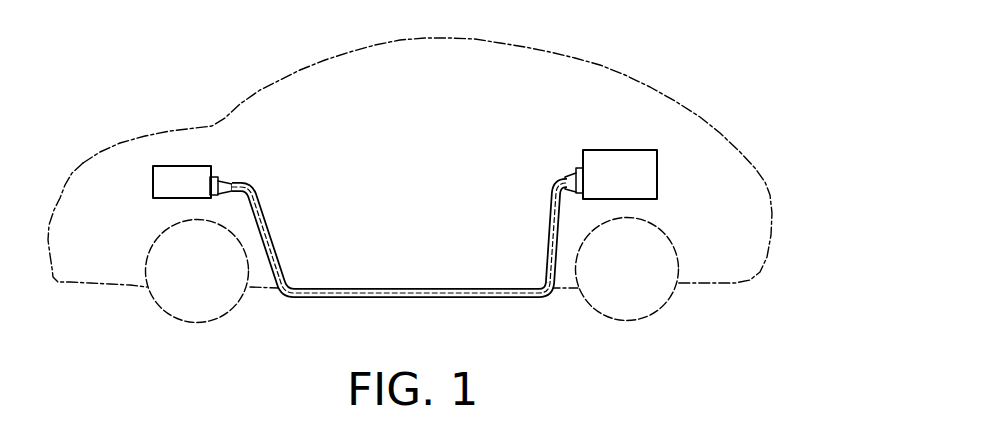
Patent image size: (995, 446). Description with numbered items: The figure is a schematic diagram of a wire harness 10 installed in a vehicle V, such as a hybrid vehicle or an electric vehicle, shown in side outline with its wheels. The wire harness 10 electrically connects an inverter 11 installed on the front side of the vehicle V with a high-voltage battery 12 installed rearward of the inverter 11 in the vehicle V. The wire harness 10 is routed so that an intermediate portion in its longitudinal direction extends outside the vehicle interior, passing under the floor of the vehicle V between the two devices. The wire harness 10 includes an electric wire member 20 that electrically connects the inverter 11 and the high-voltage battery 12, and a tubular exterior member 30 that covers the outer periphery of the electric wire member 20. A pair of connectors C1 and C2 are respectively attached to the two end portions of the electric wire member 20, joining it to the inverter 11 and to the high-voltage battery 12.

The vehicle V is at (601, 63).
The wire harness 10 is at (530, 113).
The inverter 11 is at (183, 166).
The high-voltage battery 12 is at (615, 150).
The connector C1 is at (222, 177).
The connector C2 is at (572, 170).
The electric wire member 20 is at (399, 238).
The exterior member 30 is at (253, 199).